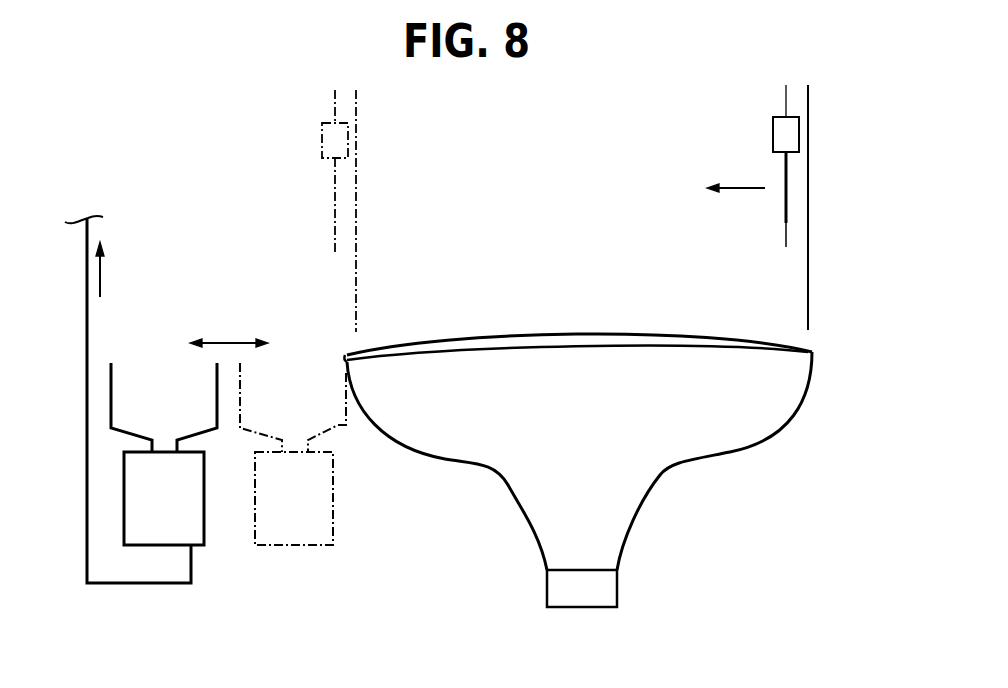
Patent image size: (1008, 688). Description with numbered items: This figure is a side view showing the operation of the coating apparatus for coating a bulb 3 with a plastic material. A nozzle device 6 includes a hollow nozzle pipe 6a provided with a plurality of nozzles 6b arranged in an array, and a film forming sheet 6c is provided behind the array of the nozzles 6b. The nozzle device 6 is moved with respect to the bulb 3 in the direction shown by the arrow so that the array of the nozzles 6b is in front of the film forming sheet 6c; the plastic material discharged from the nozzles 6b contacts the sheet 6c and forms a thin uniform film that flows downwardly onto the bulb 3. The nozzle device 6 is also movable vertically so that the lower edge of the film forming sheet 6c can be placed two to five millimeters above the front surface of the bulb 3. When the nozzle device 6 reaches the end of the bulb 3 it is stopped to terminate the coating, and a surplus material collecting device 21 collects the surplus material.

The bulb 3 is at (492, 448).
The surplus material collecting device 21 is at (113, 391).
The nozzle device 6 is at (374, 176).
The nozzle pipe 6a is at (780, 132).
The nozzles 6b is at (787, 223).
The film forming sheet 6c is at (810, 267).